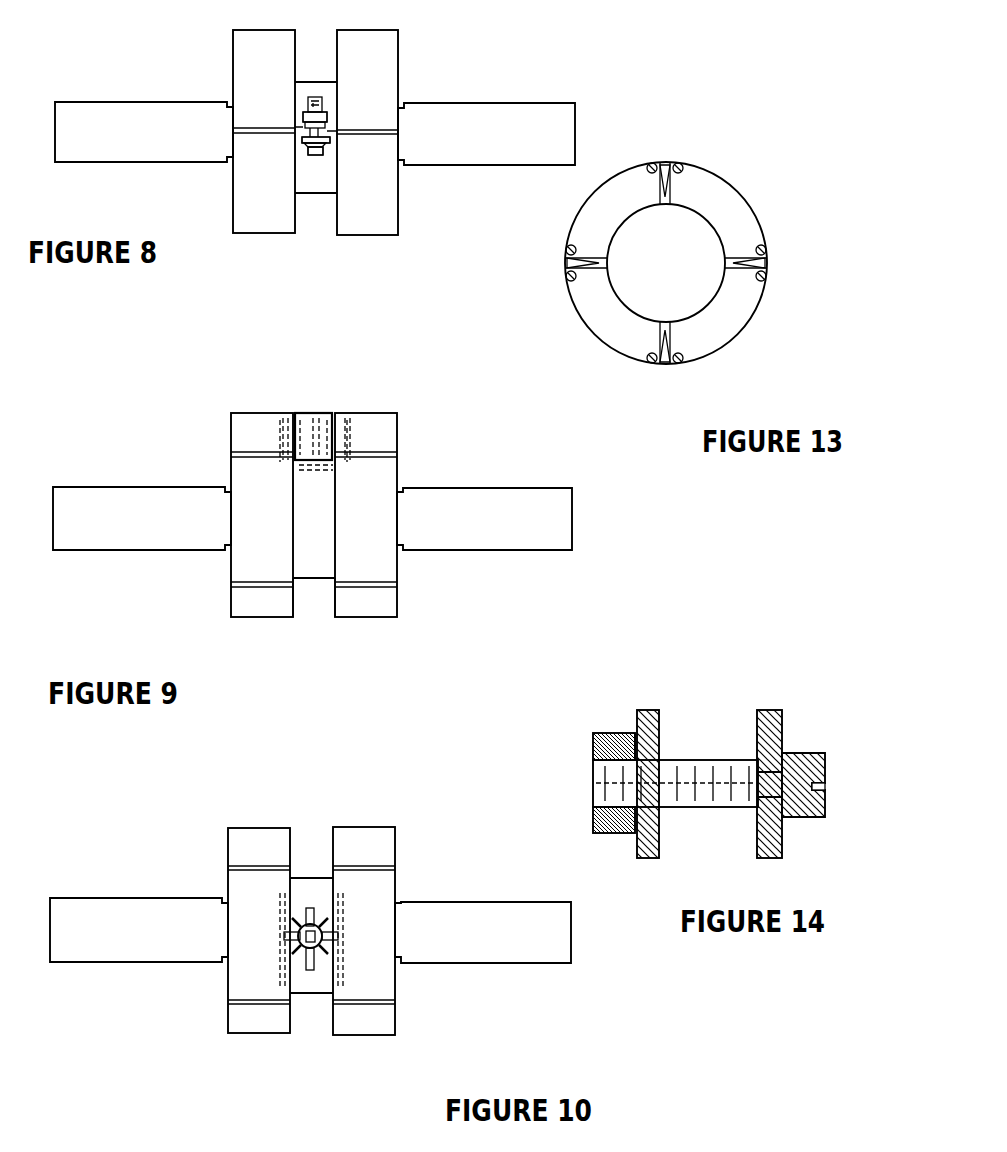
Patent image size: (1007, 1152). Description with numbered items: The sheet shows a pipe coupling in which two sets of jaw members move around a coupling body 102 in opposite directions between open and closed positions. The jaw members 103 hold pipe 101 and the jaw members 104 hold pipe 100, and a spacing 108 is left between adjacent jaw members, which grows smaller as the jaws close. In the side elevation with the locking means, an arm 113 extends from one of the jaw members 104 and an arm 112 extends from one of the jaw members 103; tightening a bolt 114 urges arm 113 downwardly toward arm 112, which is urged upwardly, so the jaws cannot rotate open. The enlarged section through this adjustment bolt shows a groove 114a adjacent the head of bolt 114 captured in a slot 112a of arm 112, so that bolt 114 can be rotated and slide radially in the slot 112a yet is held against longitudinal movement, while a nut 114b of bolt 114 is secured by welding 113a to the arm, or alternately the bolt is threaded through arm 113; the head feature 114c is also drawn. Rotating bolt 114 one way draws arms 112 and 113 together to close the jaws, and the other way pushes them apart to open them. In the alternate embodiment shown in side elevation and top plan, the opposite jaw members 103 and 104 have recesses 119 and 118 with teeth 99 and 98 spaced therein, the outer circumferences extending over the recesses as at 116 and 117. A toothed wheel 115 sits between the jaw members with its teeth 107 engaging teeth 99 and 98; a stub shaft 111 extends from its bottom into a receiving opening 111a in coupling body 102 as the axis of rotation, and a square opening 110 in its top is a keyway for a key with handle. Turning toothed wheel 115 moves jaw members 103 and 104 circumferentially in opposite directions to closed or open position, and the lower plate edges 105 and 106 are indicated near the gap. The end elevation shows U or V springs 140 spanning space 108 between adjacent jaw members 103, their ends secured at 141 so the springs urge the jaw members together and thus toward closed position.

In FIG. 10, the teeth 98 is at (287, 942).
In FIG. 10, the teeth 99 is at (340, 936).
In FIG. 8, the pipe 100 is at (68, 102).
In FIG. 9, the pipe 100 is at (66, 487).
In FIG. 10, the pipe 100 is at (52, 898).
In FIG. 8, the pipe 101 is at (490, 103).
In FIG. 9, the pipe 101 is at (550, 488).
In FIG. 8, the coupling body 102 is at (320, 193).
In FIG. 9, the coupling body 102 is at (315, 545).
In FIG. 8, the jaw members 103 is at (382, 207).
In FIG. 13, the jaw members 103 is at (717, 330).
In FIG. 9, the jaw members 103 is at (392, 598).
In FIG. 10, the jaw members 103 is at (382, 1012).
In FIG. 8, the jaw members 104 is at (267, 113).
In FIG. 9, the jaw members 104 is at (232, 608).
In FIG. 10, the jaw members 104 is at (242, 982).
In FIG. 9, the lower edge of second plate 105 is at (334, 592).
In FIG. 9, the lower edge of first plate 106 is at (294, 592).
In FIG. 9, the teeth 107 is at (289, 420).
In FIG. 10, the teeth 107 is at (285, 940).
In FIG. 8, the spacing 108 is at (265, 133).
In FIG. 13, the spacing 108 is at (607, 266).
In FIG. 9, the spacing 108 is at (260, 578).
In FIG. 10, the spacing 108 is at (265, 867).
In FIG. 9, the square opening 110 is at (316, 413).
In FIG. 10, the square opening 110 is at (320, 924).
In FIG. 9, the stub shaft 111 is at (290, 473).
In FIG. 9, the receiving opening 111a is at (340, 465).
In FIG. 8, the arm 112 is at (328, 144).
In FIG. 14, the arm 112 is at (757, 853).
In FIG. 8, the slot 112a is at (305, 146).
In FIG. 14, the slot 112a is at (760, 808).
In FIG. 8, the arm 113 is at (303, 120).
In FIG. 14, the arm 113 is at (660, 723).
In FIG. 14, the welding 113a is at (635, 733).
In FIG. 8, the bolt 114 is at (318, 142).
In FIG. 14, the bolt 114 is at (824, 757).
In FIG. 8, the groove 114a is at (330, 139).
In FIG. 14, the groove 114a is at (762, 752).
In FIG. 8, the nut 114b is at (324, 112).
In FIG. 14, the nut 114b is at (598, 747).
In FIG. 14, the head slot 114c is at (826, 790).
In FIG. 9, the toothed wheel 115 is at (312, 413).
In FIG. 10, the toothed wheel 115 is at (312, 903).
In FIG. 9, the outer circumference extension 116 is at (345, 417).
In FIG. 9, the outer circumference extension 117 is at (280, 447).
In FIG. 10, the recess 118 is at (292, 982).
In FIG. 10, the recess 119 is at (347, 960).
In FIG. 13, the springs 140 is at (757, 245).
In FIG. 13, the spring end securement 141 is at (753, 255).